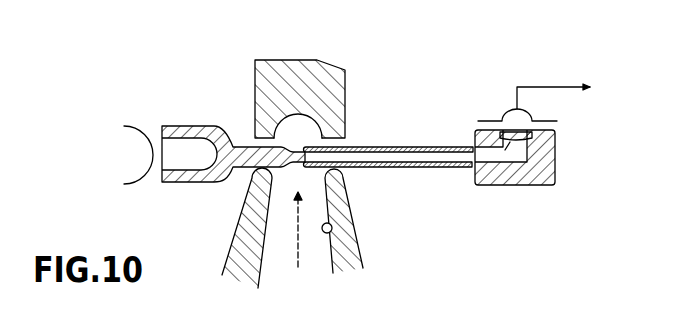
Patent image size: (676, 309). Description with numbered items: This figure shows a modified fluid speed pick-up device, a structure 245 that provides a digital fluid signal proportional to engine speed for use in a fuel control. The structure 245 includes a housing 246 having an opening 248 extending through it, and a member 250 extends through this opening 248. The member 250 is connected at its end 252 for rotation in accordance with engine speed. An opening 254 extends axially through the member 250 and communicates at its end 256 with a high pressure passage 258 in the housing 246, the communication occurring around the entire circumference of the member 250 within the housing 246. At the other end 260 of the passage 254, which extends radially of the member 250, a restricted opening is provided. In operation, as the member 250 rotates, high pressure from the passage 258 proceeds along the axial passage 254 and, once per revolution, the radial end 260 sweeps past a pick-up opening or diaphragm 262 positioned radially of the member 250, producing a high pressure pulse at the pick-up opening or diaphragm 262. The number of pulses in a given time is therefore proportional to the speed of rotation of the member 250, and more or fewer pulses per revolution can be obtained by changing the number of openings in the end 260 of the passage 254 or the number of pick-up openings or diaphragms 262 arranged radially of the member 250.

The structure for providing a digital signal proportional to engine speed 245 is at (438, 60).
The housing 246 is at (345, 83).
The opening 248 is at (338, 146).
The member 250 is at (392, 167).
The end 252 is at (207, 182).
The opening 254 is at (455, 157).
The end 256 is at (300, 150).
The high pressure passage 258 is at (333, 230).
The end 260 is at (528, 129).
The pick-up opening or diaphragm 262 is at (510, 112).